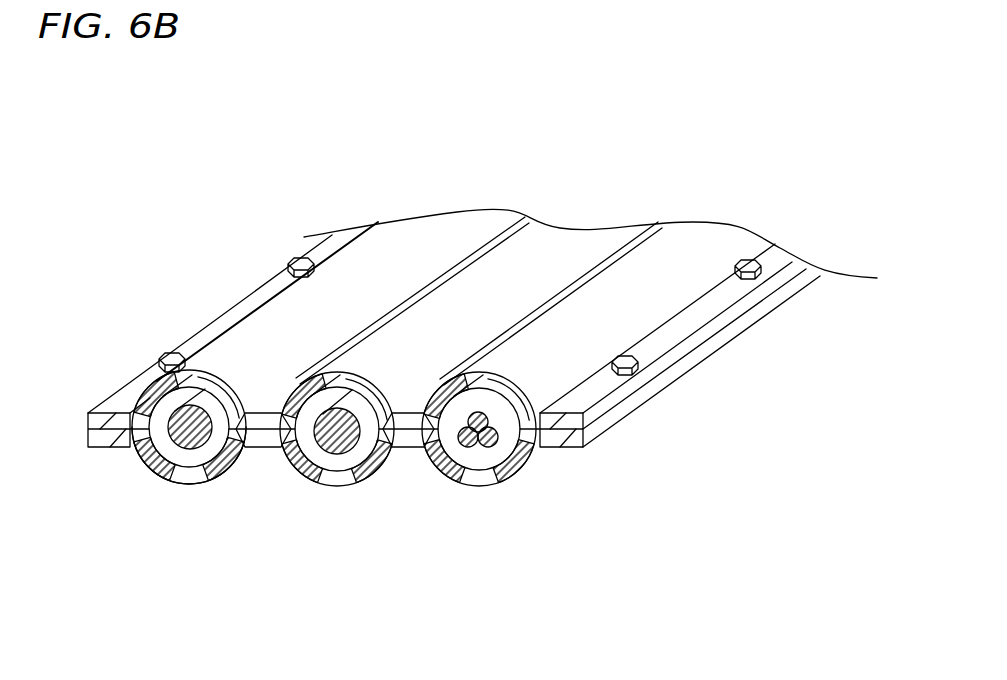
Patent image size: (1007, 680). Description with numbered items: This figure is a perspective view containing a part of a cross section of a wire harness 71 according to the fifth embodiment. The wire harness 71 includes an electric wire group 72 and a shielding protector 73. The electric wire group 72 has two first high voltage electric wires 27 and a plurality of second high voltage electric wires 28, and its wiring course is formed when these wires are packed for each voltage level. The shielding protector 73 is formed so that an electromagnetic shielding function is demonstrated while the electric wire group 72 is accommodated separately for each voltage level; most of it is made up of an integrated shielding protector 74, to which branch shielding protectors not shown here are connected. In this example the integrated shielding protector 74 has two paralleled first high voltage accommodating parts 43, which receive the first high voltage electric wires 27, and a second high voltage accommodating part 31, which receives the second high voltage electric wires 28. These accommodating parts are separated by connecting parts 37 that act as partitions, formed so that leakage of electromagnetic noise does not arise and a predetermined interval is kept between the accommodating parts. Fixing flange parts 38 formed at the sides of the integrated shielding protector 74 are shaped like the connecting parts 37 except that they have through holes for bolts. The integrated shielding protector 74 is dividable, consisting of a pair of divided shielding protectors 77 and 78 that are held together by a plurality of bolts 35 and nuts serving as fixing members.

The wire harness 71 is at (663, 172).
The electric wire group 72 is at (229, 60).
The first high voltage electric wire 27 is at (338, 527).
The second high voltage electric wire 28 is at (480, 540).
The second high voltage accommodating part 31 is at (458, 455).
The bolt 35 is at (302, 257).
The connecting part 37 is at (277, 400).
The fixing flange part 38 is at (130, 397).
The first high voltage accommodating part 43 is at (134, 477).
The shielding protector 73 is at (533, 210).
The integrated shielding protector 74 is at (581, 326).
The divided shielding protector 77 is at (231, 338).
The divided shielding protector 78 is at (194, 486).